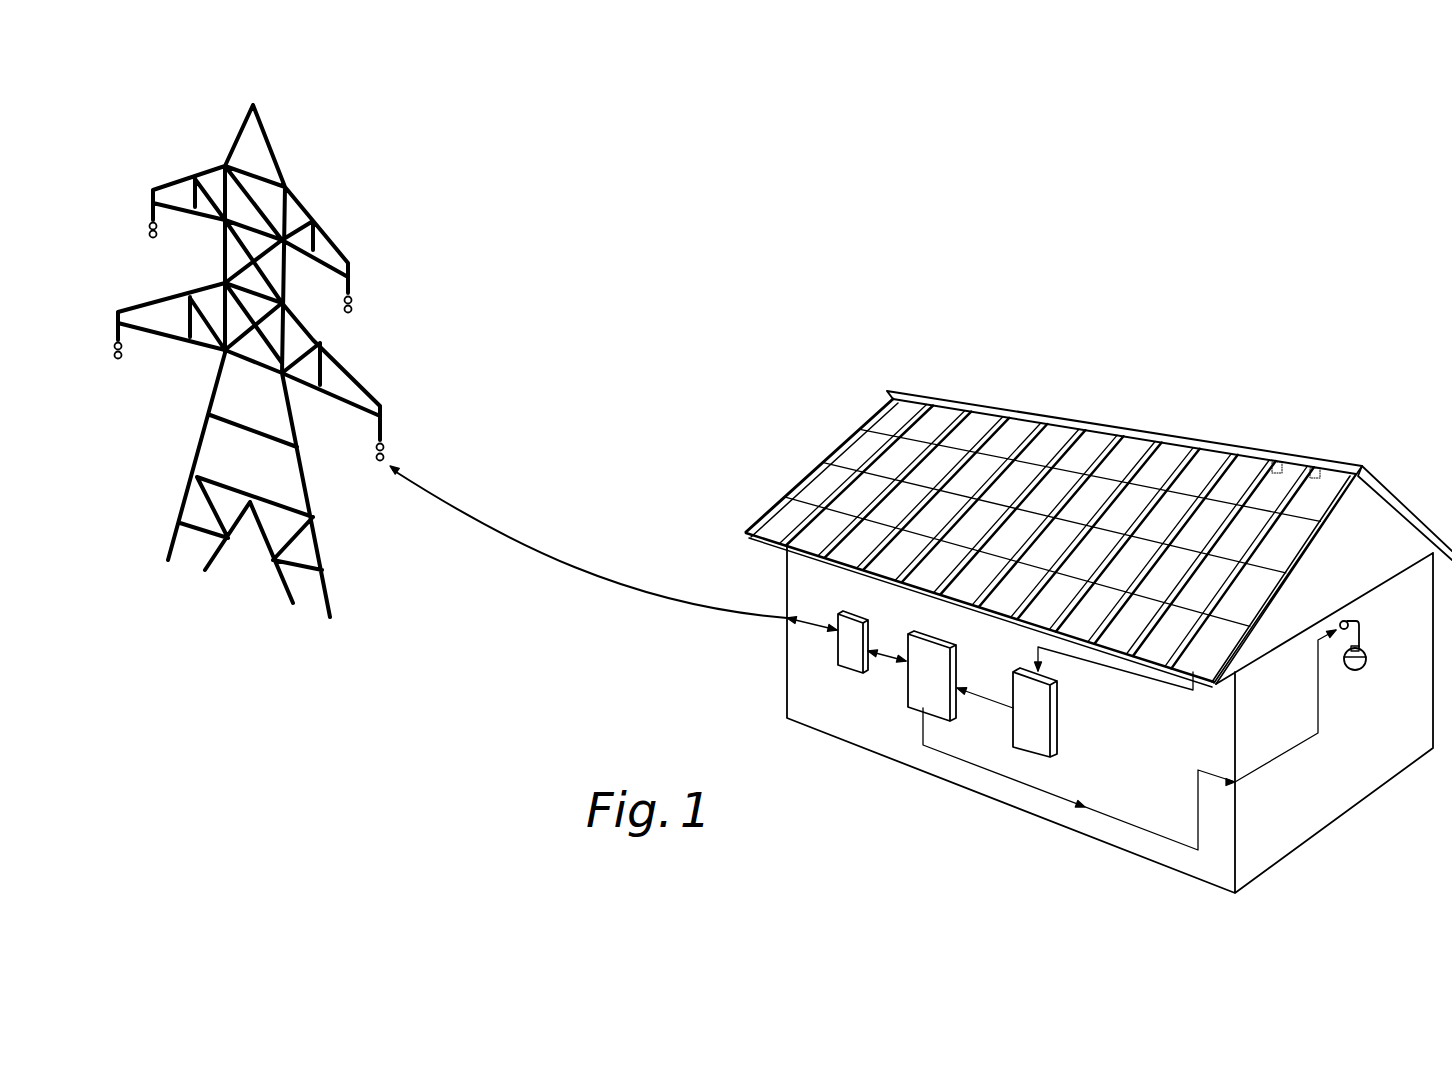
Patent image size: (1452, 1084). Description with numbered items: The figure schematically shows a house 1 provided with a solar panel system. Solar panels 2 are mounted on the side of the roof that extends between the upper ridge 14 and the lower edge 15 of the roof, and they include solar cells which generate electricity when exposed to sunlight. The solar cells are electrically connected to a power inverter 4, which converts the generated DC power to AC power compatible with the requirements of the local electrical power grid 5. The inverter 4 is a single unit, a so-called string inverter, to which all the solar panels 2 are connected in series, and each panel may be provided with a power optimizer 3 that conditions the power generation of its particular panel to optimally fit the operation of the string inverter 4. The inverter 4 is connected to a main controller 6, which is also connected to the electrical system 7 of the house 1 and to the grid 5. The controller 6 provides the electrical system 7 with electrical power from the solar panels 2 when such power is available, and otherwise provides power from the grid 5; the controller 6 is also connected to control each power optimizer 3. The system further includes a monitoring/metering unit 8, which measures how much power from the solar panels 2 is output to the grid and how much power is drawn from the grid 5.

The house 1 is at (1403, 425).
The solar panels 2 is at (1118, 447).
The power optimizer 3 is at (1310, 465).
The power inverter 4 is at (1036, 735).
The electrical power grid 5 is at (352, 243).
The main controller 6 is at (938, 698).
The electrical system 7 is at (1318, 692).
The monitoring/metering unit 8 is at (851, 662).
The upper ridge 14 is at (898, 393).
The lower edge 15 is at (746, 533).